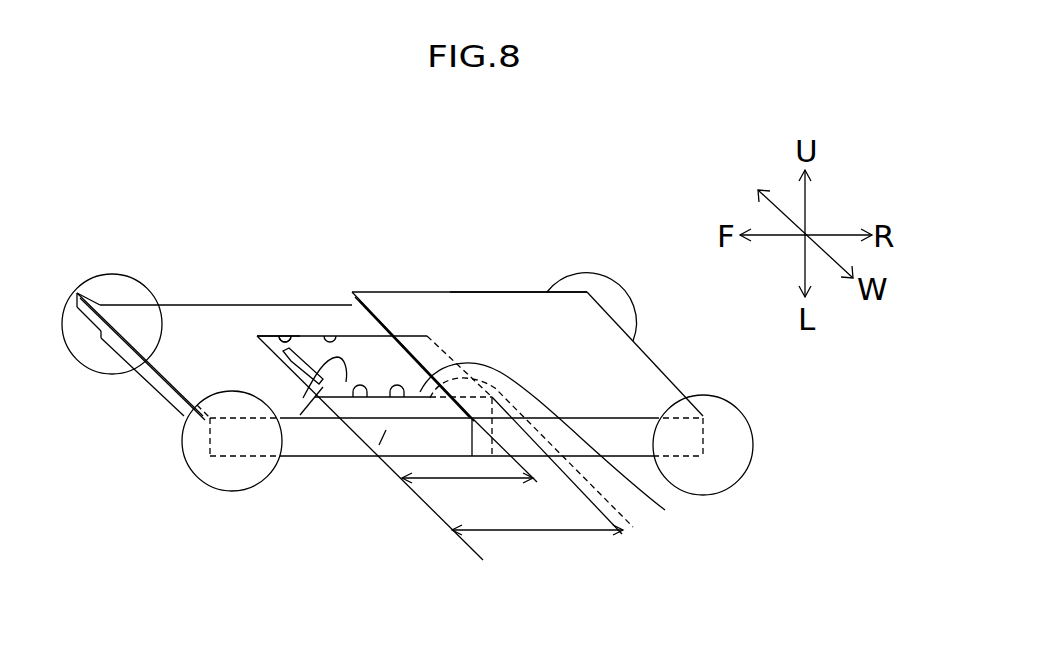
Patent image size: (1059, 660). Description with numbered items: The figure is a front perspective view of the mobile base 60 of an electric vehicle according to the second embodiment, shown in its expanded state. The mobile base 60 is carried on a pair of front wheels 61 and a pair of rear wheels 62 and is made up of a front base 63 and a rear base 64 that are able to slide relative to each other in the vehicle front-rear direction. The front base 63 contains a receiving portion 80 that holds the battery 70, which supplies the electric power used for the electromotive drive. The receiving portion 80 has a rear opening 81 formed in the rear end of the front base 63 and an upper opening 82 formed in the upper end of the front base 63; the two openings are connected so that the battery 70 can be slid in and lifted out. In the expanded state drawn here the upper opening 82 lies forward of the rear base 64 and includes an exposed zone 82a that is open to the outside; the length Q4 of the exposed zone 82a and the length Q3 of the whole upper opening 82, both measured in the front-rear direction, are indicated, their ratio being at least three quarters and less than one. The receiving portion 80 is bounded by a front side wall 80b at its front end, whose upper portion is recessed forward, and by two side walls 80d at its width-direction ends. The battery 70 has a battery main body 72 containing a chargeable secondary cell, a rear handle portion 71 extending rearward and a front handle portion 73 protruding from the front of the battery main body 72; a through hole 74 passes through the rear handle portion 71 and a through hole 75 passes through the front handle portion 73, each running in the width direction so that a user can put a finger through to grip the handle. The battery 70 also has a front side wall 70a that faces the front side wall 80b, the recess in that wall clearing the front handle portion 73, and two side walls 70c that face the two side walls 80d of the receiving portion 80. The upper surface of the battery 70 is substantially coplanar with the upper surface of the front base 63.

The mobile base 60 is at (412, 290).
The front wheels 61 is at (108, 273).
The rear wheels 62 is at (603, 273).
The front base 63 is at (195, 305).
The rear base 64 is at (510, 292).
The battery 70 is at (347, 354).
The front side wall 70a is at (230, 312).
The side walls 70c is at (312, 334).
The rear handle portion 71 is at (437, 305).
The battery main body 72 is at (378, 305).
The front handle portion 73 is at (300, 415).
The through hole 74 is at (467, 335).
The through hole 75 is at (303, 398).
The receiving portion 80 is at (665, 510).
The front side wall 80b is at (283, 383).
The side walls 80d is at (283, 350).
The rear opening 81 is at (636, 530).
The upper opening 82 is at (359, 400).
The exposed zone 82a is at (330, 334).
The length of the upper opening Q3 is at (537, 547).
The length of the exposed zone Q4 is at (467, 495).